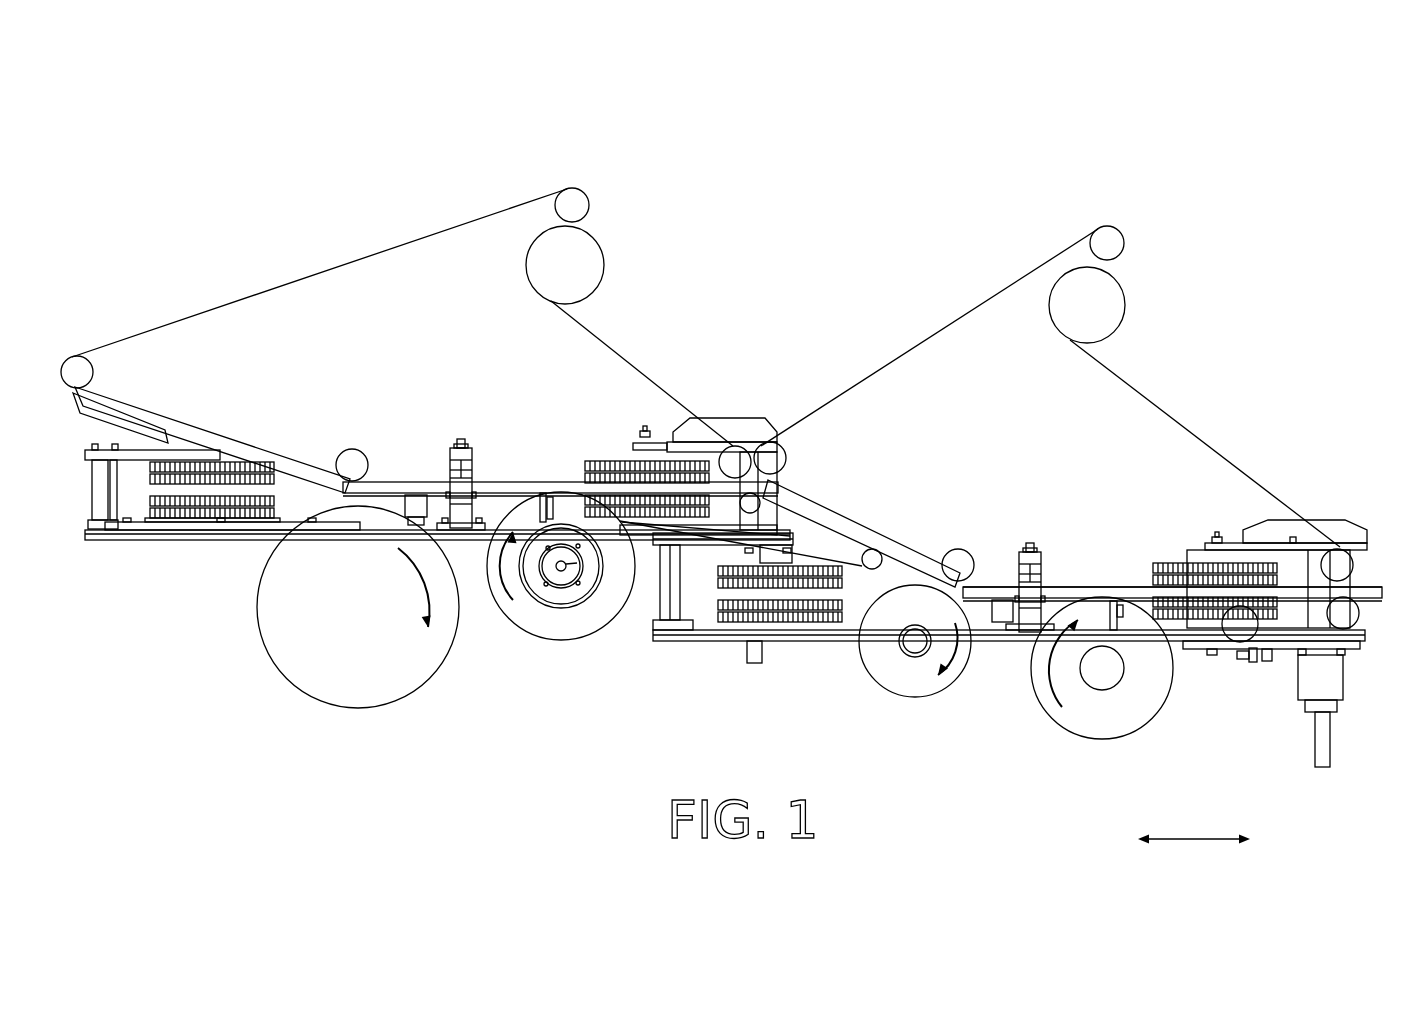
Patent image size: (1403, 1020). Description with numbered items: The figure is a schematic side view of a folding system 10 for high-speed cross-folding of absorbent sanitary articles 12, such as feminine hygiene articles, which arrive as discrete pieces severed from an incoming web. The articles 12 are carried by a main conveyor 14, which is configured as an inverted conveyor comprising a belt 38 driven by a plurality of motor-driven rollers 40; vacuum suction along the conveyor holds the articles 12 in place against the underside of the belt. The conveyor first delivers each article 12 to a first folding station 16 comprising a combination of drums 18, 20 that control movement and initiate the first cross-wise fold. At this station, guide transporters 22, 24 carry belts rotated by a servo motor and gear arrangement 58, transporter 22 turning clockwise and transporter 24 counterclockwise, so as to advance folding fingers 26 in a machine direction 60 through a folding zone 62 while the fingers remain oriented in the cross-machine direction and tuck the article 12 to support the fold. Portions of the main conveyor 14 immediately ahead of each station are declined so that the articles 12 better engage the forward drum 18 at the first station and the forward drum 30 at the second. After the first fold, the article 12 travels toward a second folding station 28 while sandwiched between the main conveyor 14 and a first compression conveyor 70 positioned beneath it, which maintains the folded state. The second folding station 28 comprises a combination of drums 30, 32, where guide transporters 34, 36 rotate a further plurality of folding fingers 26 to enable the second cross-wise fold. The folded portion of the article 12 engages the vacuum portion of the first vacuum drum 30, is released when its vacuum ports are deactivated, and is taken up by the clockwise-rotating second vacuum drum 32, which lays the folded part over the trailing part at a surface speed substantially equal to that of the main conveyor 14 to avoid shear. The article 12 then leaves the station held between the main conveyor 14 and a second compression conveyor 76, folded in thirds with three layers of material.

The folding system 10 is at (1117, 143).
The article 12 is at (87, 415).
The main conveyor 14 is at (262, 427).
The first folding station 16 is at (437, 656).
The first drum 18 is at (360, 710).
The drum 20 is at (562, 636).
The guide transporter 22 is at (126, 514).
The guide transporter 24 is at (130, 493).
The folding fingers 26 is at (413, 503).
The second folding station 28 is at (1009, 687).
The first vacuum drum 30 is at (917, 697).
The second vacuum drum 32 is at (1103, 738).
The guide transporter 34 is at (743, 615).
The guide transporter 36 is at (717, 597).
The belt 38 is at (153, 420).
The motor-driven rollers 40 is at (92, 363).
The servo motor and gear arrangement 58 is at (192, 518).
The machine direction 60 is at (1193, 838).
The folding zone 62 is at (467, 560).
The first compression conveyor 70 is at (858, 562).
The second compression conveyor 76 is at (1253, 637).